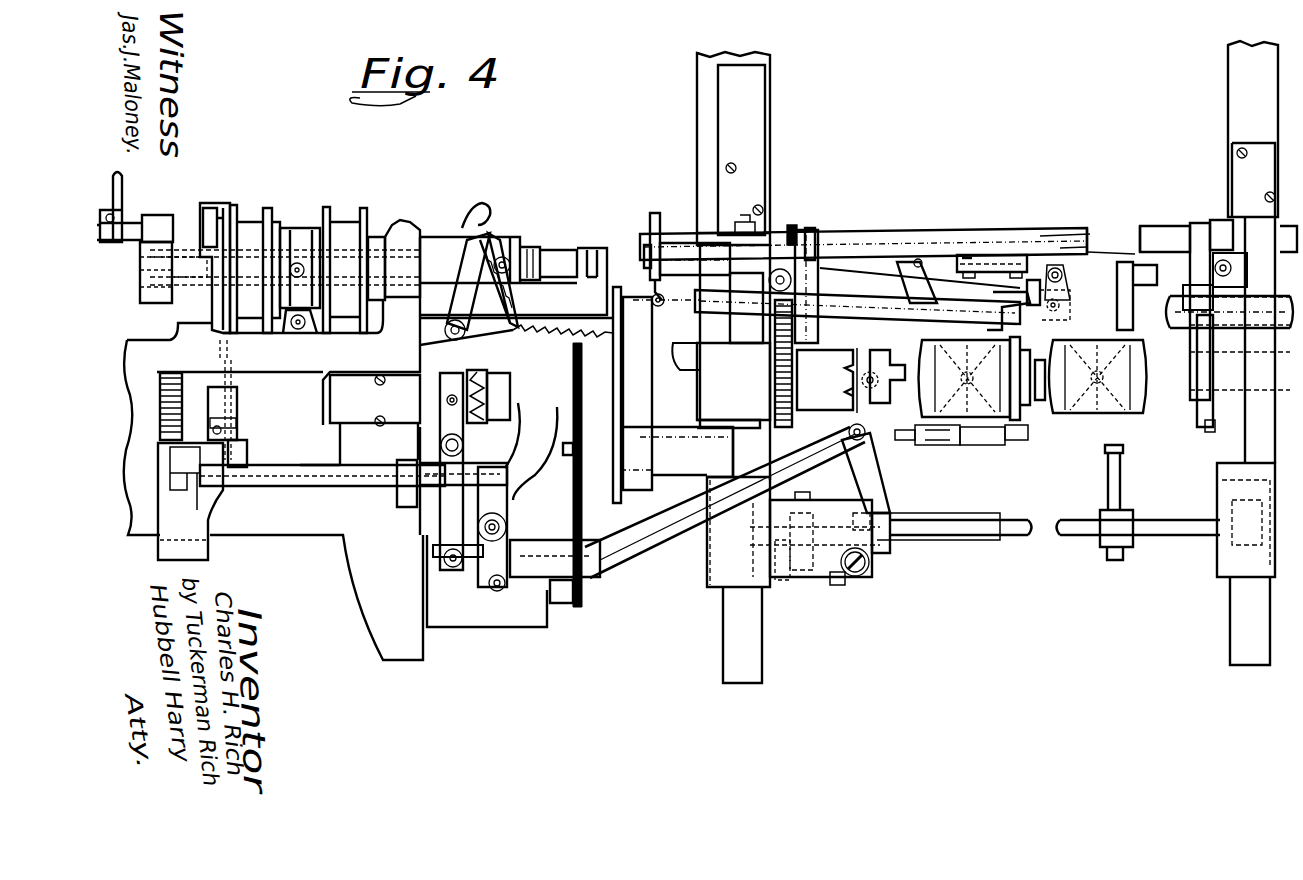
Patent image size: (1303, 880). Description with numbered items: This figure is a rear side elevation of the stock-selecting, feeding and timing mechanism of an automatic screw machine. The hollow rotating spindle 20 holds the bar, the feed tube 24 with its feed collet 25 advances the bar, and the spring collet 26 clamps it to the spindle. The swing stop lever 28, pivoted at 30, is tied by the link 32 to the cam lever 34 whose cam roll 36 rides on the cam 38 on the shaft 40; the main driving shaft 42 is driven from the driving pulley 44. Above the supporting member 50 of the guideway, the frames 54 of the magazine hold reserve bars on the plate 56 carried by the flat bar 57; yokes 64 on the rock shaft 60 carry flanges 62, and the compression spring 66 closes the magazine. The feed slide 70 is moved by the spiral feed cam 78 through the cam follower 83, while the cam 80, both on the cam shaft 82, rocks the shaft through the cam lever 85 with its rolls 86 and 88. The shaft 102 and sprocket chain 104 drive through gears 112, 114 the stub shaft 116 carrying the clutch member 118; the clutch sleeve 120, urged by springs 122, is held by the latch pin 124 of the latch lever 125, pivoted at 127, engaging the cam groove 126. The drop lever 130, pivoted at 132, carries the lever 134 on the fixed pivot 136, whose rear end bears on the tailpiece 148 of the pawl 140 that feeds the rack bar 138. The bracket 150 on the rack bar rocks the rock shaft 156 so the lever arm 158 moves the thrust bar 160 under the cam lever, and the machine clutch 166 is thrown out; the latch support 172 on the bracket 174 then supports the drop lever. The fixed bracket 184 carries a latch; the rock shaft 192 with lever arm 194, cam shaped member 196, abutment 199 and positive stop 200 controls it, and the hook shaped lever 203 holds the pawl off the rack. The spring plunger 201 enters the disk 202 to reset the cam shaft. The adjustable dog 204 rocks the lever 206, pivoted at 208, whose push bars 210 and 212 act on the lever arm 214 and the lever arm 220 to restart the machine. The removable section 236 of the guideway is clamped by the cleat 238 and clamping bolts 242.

The hollow rotating spindle 20 is at (392, 248).
The feed tube 24 is at (552, 257).
The feed collet 25 is at (238, 262).
The spring collet 26 is at (165, 253).
The swing stop lever 28 is at (120, 190).
The pivot 30 is at (178, 215).
The link 32 is at (233, 378).
The cam lever 34 is at (243, 467).
The cam roll 36 is at (240, 452).
The cam 38 is at (237, 429).
The shaft 40 is at (242, 398).
The main driving shaft 42 is at (330, 379).
The driving pulley 44 is at (640, 490).
The supporting member 50 is at (1143, 241).
The frames 54 is at (752, 104).
The plate 56 is at (1033, 228).
The flat bar 57 is at (1058, 241).
The rock shaft 60 is at (863, 310).
The flanges 62 is at (791, 226).
The yokes 64 is at (808, 291).
The compression spring 66 is at (811, 238).
The feed slide 70 is at (1040, 383).
The spiral feed cam 78 is at (1100, 414).
The cam 80 is at (1196, 374).
The cam shaft 82 is at (1242, 390).
The cam follower 83 is at (997, 448).
The cam lever 85 is at (1000, 310).
The cam roll 86 is at (1026, 377).
The cam roll 88 is at (1015, 289).
The shaft 102 is at (520, 494).
The sprocket chain 104 is at (584, 524).
The gear 112 is at (728, 413).
The gear 114 is at (775, 382).
The stub shaft 116 is at (715, 321).
The clutch member 118 is at (775, 360).
The clutch sleeve 120 is at (850, 353).
The compression springs 122 is at (897, 350).
The latch pin 124 is at (843, 378).
The latch lever 125 is at (887, 474).
The cam groove 126 is at (843, 397).
The pivot 127 is at (877, 513).
The drop lever 130 is at (657, 213).
The pivot 132 is at (645, 258).
The lever 134 is at (882, 240).
The fixed pivot 136 is at (930, 240).
The rack bar 138 is at (560, 332).
The pawl 140 is at (1063, 308).
The tailpiece 148 is at (1068, 272).
The bracket 150 is at (468, 446).
The rock shaft 156 is at (507, 526).
The lever arm 158 is at (508, 506).
The thrust bar 160 is at (353, 483).
The machine clutch 166 is at (453, 377).
The latch support 172 is at (668, 288).
The bracket 174 is at (672, 302).
The fixed bracket 184 is at (852, 424).
The rock shaft 192 is at (1030, 540).
The lever arm 194 is at (1117, 474).
The cam shaped member 196 is at (975, 445).
The abutment 199 is at (798, 583).
The positive stop 200 is at (775, 583).
The spring plunger 201 is at (1010, 442).
The disk 202 is at (1203, 421).
The hook shaped lever 203 is at (1111, 250).
The adjustable dog 204 is at (906, 442).
The lever 206 is at (848, 487).
The pivot 208 is at (870, 576).
The push bar 210 is at (620, 567).
The push bar 212 is at (555, 571).
The lever arm 214 is at (497, 585).
The lever arm 220 is at (445, 515).
The removable section 236 is at (1013, 250).
The cleat 238 is at (967, 255).
The clamping bolts 242 is at (1037, 232).